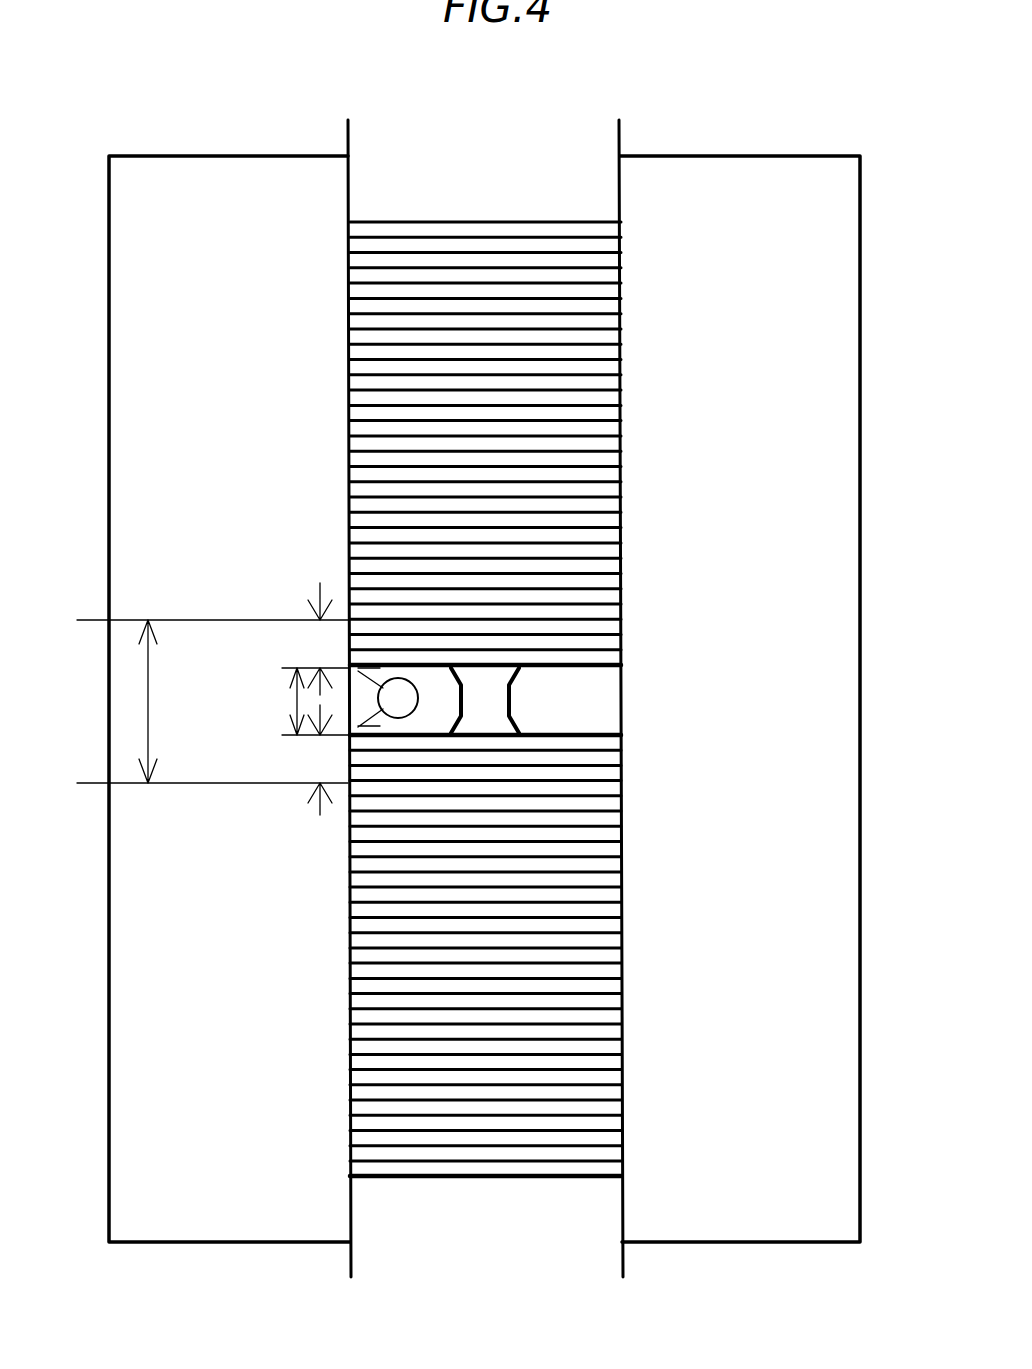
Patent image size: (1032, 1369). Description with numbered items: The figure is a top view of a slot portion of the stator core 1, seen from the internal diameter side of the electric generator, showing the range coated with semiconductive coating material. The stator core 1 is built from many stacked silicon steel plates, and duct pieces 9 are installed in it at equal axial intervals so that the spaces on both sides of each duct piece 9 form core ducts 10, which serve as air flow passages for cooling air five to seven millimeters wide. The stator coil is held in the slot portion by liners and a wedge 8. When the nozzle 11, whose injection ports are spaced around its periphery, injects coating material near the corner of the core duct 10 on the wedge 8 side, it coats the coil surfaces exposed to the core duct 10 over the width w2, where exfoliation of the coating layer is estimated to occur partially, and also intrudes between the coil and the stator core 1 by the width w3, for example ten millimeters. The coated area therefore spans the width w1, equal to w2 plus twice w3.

The stator core 1 is at (570, 1150).
The wedge 8 is at (800, 472).
The duct piece 9 is at (490, 704).
The core duct 10 is at (607, 718).
The nozzle 11 is at (410, 716).
The width w1 is at (148, 718).
The width w2 is at (297, 702).
The width w3 is at (309, 699).